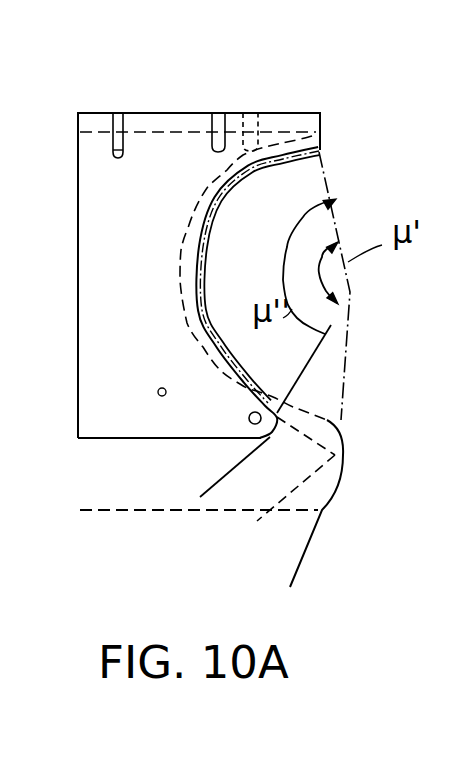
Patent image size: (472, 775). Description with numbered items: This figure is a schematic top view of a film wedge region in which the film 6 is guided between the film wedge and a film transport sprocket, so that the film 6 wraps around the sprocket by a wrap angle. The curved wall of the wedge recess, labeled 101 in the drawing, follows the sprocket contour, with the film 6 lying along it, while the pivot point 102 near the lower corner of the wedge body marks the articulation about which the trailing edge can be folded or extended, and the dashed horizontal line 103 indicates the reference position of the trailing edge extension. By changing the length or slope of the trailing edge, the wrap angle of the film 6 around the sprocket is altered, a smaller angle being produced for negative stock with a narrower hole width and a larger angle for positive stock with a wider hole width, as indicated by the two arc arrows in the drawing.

The curved wall portion 101 is at (203, 217).
The film 6 is at (242, 372).
The pivot 102 is at (247, 417).
The horizontal reference line 103 is at (214, 500).